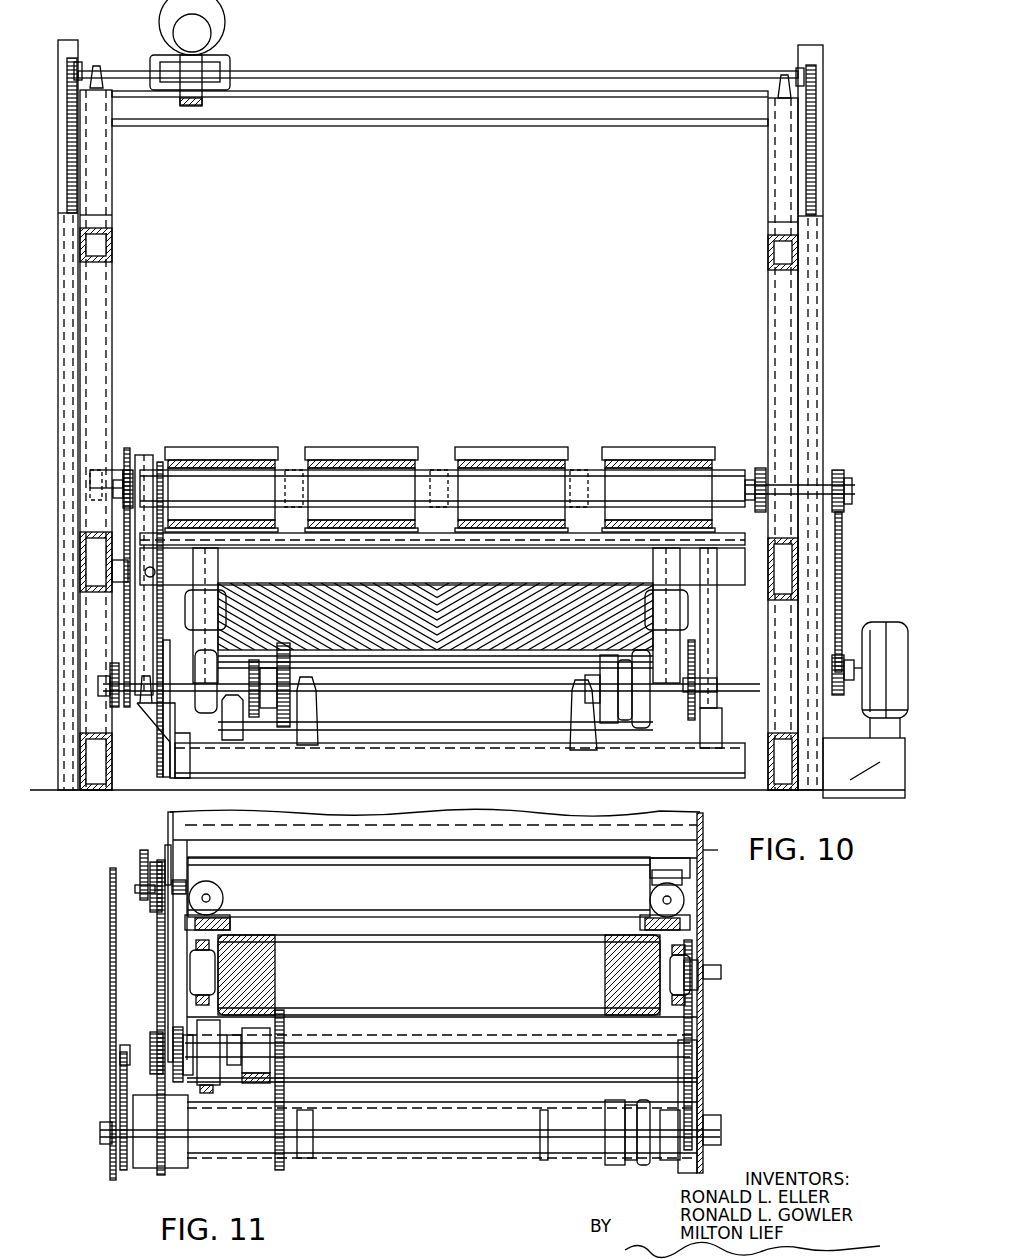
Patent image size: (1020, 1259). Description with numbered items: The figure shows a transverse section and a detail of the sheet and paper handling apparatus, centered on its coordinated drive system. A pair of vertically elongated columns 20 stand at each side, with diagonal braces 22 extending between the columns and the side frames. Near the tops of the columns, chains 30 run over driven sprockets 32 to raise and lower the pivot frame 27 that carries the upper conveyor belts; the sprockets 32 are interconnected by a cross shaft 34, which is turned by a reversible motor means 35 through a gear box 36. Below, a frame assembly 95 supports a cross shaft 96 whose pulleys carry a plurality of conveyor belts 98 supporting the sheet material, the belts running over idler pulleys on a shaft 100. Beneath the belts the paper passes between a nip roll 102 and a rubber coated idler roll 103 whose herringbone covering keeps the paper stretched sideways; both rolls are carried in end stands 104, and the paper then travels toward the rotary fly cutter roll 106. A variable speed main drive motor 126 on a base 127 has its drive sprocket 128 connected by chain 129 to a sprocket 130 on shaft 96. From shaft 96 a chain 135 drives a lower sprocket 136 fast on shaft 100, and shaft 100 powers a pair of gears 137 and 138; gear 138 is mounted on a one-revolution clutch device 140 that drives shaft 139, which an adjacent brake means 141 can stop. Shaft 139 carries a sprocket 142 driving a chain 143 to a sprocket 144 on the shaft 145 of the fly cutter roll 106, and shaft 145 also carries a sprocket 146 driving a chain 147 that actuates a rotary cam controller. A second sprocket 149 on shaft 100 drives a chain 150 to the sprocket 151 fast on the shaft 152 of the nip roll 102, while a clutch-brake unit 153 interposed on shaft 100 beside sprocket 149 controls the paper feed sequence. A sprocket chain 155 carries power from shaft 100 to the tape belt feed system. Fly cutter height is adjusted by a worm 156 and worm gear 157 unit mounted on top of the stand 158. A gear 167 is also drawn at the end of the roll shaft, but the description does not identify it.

In FIG. 10, the column 20 is at (100, 198).
In FIG. 10, the diagonal brace 22 is at (112, 246).
In FIG. 10, the pivot frame 27 is at (412, 488).
In FIG. 10, the chain 30 is at (68, 178).
In FIG. 10, the driven sprocket 32 is at (80, 66).
In FIG. 10, the cross shaft 34 is at (396, 72).
In FIG. 10, the reversible motor means 35 is at (202, 38).
In FIG. 10, the gear box 36 is at (192, 106).
In FIG. 10, the frame assembly 95 is at (508, 548).
In FIG. 10, the cross shaft 96 is at (268, 490).
In FIG. 10, the conveyor belt 98 is at (205, 447).
In FIG. 10, the shaft 100 is at (420, 688).
In FIG. 11, the shaft 100 is at (385, 1155).
In FIG. 10, the nip roll 102 is at (446, 718).
In FIG. 11, the nip roll 102 is at (432, 982).
In FIG. 10, the rubber coated idler roll 103 is at (372, 600).
In FIG. 11, the rubber coated idler roll 103 is at (272, 945).
In FIG. 10, the end stand 104 is at (220, 568).
In FIG. 11, the end stand 104 is at (190, 942).
In FIG. 10, the rotary fly cutter roll 106 is at (355, 498).
In FIG. 11, the rotary fly cutter roll 106 is at (440, 898).
In FIG. 10, the variable speed main drive motor 126 is at (885, 620).
In FIG. 10, the base 127 is at (865, 726).
In FIG. 10, the drive sprocket 128 is at (850, 655).
In FIG. 10, the chain 129 is at (842, 566).
In FIG. 10, the sprocket 130 is at (845, 470).
In FIG. 10, the chain 135 is at (124, 600).
In FIG. 11, the chain 135 is at (120, 1076).
In FIG. 11, the lower sprocket 136 is at (130, 1160).
In FIG. 11, the gear 137 is at (284, 1160).
In FIG. 11, the gear 138 is at (296, 1035).
In FIG. 11, the shaft 139 is at (310, 1058).
In FIG. 11, the one-revolution clutch device 140 is at (265, 1028).
In FIG. 11, the brake means 141 is at (205, 1092).
In FIG. 10, the sprocket 142 is at (108, 665).
In FIG. 11, the sprocket 142 is at (150, 1046).
In FIG. 10, the chain 143 is at (157, 623).
In FIG. 11, the chain 143 is at (155, 974).
In FIG. 10, the sprocket 144 is at (145, 580).
In FIG. 11, the sprocket 144 is at (158, 906).
In FIG. 10, the shaft 145 is at (140, 562).
In FIG. 11, the shaft 145 is at (178, 880).
In FIG. 10, the sprocket 146 is at (113, 494).
In FIG. 11, the sprocket 146 is at (146, 882).
In FIG. 10, the chain 147 is at (88, 478).
In FIG. 10, the second sprocket 149 is at (708, 752).
In FIG. 11, the second sprocket 149 is at (712, 1128).
In FIG. 10, the chain 150 is at (694, 690).
In FIG. 11, the chain 150 is at (698, 1068).
In FIG. 10, the sprocket 151 is at (698, 656).
In FIG. 11, the sprocket 151 is at (700, 960).
In FIG. 11, the shaft 152 is at (721, 972).
In FIG. 10, the clutch-brake unit 153 is at (608, 678).
In FIG. 11, the clutch-brake unit 153 is at (615, 1098).
In FIG. 10, the sprocket chain 155 is at (115, 690).
In FIG. 11, the sprocket chain 155 is at (110, 1020).
In FIG. 11, the worm 156 is at (235, 925).
In FIG. 11, the worm gear 157 is at (222, 898).
In FIG. 11, the stand 158 is at (660, 882).
In FIG. 10, the gear 167 is at (760, 470).